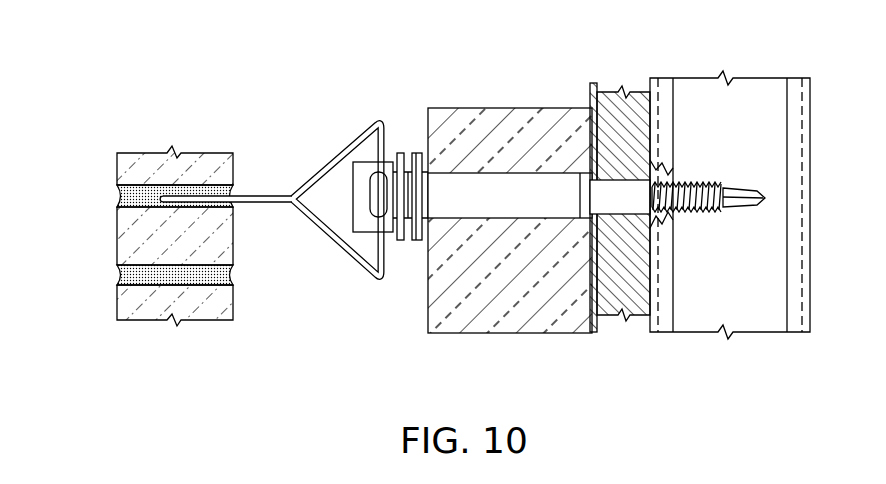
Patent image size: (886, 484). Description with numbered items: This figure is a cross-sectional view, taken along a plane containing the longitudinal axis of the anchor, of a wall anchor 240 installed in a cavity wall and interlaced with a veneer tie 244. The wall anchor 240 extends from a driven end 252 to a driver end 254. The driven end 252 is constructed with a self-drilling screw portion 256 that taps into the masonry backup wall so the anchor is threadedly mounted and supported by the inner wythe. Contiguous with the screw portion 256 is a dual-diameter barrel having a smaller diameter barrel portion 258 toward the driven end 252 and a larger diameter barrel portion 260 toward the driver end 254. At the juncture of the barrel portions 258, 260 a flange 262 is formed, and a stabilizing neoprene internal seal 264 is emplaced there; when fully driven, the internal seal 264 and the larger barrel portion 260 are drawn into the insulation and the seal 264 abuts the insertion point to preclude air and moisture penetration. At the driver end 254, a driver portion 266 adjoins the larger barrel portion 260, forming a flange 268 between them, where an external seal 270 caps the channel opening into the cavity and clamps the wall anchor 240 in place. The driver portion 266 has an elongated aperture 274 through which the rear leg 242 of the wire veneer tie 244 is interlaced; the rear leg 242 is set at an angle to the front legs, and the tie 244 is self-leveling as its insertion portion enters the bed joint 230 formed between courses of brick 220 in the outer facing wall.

The brick 220 is at (117, 300).
The bed joint 230 is at (118, 198).
The wall anchor 240 is at (507, 165).
The rear leg 242 is at (393, 258).
The veneer tie 244 is at (257, 183).
The driven end 252 is at (765, 183).
The driver end 254 is at (398, 125).
The self-drilling screw portion 256 is at (747, 208).
The smaller diameter barrel portion 258 is at (622, 205).
The larger diameter barrel portion 260 is at (520, 205).
The flange 262 is at (607, 178).
The internal seal 264 is at (583, 213).
The driver portion 266 is at (352, 165).
The flange 268 is at (424, 195).
The external seal 270 is at (424, 242).
The elongated aperture 274 is at (368, 197).